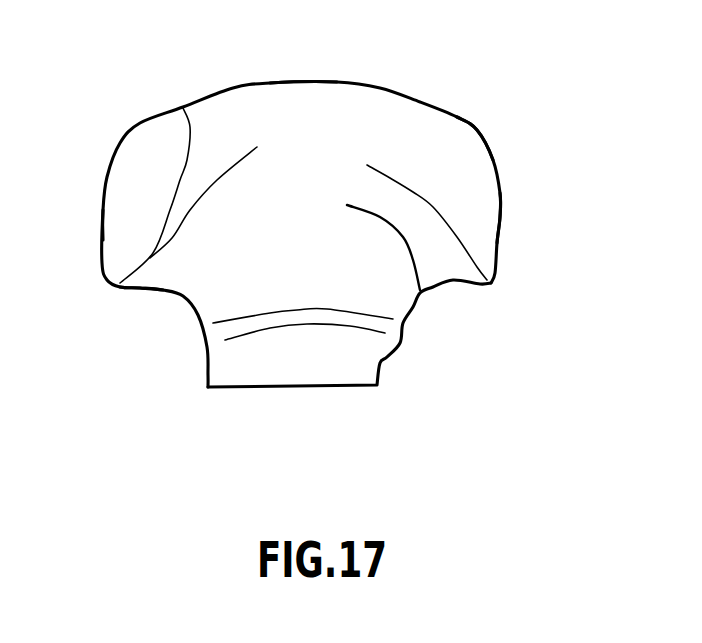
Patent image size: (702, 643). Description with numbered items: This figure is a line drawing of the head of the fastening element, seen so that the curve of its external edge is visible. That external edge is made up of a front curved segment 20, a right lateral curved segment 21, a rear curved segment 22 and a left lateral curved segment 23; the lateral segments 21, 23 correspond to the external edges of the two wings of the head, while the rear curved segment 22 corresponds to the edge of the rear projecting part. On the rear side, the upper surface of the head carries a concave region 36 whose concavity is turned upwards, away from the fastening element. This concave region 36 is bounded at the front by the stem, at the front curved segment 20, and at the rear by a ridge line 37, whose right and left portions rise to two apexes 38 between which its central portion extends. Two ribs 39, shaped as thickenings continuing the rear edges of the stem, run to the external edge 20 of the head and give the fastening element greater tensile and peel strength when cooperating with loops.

The front curved segment 20 is at (305, 318).
The right lateral curved segment 21 is at (103, 212).
The rear curved segment 22 is at (310, 82).
The left lateral curved segment 23 is at (477, 130).
The concave region 36 is at (420, 290).
The ridge line 37 is at (413, 192).
The apexes 38 is at (488, 223).
The ribs 39 is at (273, 162).